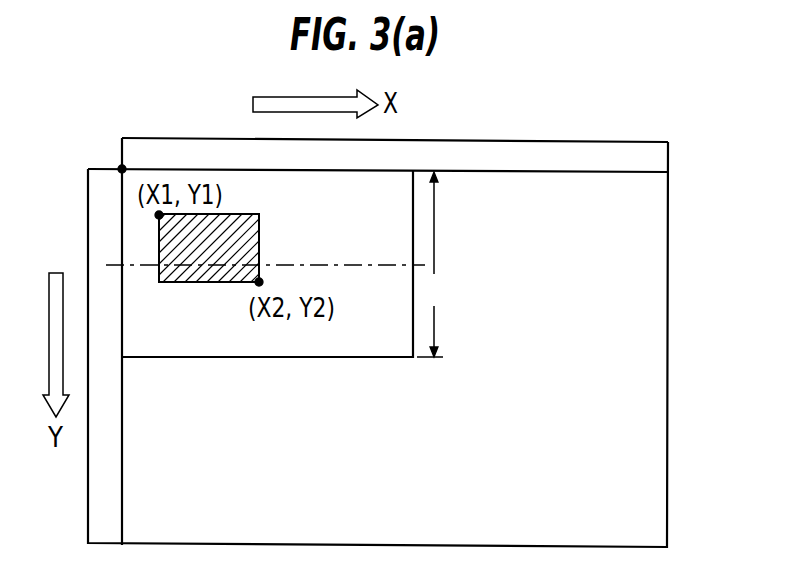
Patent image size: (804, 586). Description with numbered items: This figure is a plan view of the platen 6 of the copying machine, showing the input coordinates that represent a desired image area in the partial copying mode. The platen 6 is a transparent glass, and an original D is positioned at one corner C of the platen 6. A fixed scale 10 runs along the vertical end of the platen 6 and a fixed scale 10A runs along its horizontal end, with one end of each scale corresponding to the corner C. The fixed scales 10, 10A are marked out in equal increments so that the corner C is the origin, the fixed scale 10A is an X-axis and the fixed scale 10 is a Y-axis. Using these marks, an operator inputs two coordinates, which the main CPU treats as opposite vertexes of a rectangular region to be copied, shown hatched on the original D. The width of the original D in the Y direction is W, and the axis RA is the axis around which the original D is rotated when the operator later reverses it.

The platen 6 is at (653, 260).
The fixed scale 10A is at (508, 152).
The fixed scale 10 is at (102, 523).
The corner C is at (122, 168).
The original D is at (340, 357).
The axis RA is at (320, 265).
The width of original W is at (432, 264).